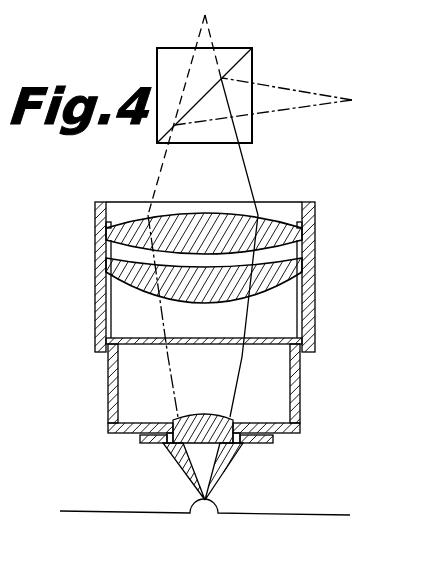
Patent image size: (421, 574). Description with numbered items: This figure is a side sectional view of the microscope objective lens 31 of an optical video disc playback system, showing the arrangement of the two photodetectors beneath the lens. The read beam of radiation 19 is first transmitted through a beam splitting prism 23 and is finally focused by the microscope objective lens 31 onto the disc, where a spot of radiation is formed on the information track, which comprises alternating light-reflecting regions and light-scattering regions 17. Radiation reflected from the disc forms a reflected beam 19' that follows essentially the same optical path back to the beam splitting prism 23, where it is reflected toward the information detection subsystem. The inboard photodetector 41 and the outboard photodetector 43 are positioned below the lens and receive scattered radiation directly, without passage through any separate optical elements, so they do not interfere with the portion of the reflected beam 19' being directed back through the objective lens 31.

The beam splitting prism 23 is at (172, 58).
The read beam of radiation 19 is at (214, 210).
The reflected beam 19' is at (271, 92).
The microscope objective lens 31 is at (323, 293).
The inboard photodetector 41 is at (143, 443).
The outboard photodetector 43 is at (272, 443).
The light-scattering region 17 is at (220, 503).